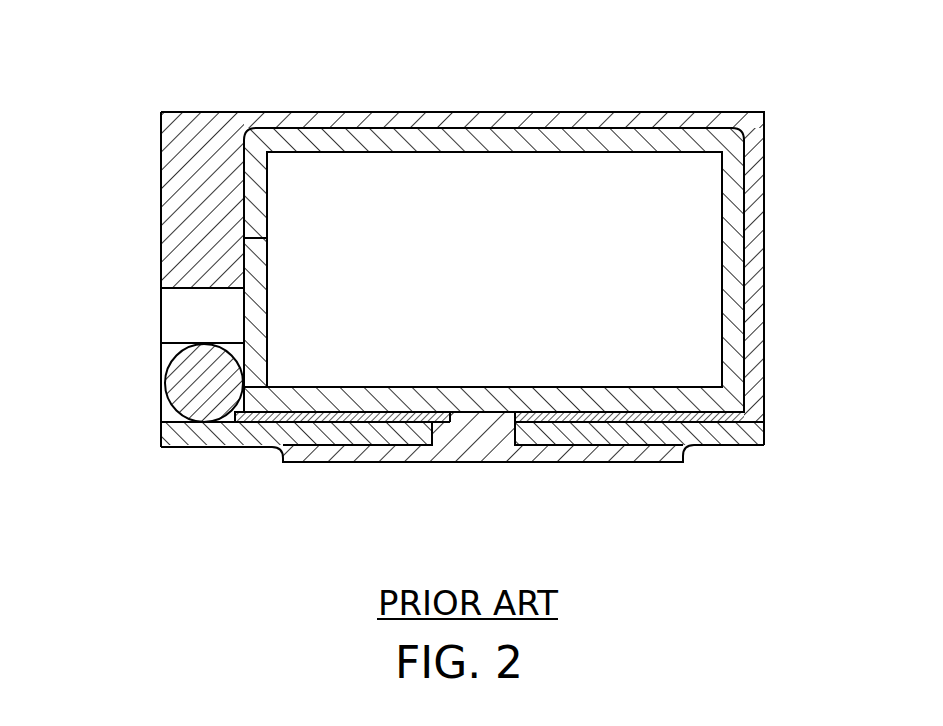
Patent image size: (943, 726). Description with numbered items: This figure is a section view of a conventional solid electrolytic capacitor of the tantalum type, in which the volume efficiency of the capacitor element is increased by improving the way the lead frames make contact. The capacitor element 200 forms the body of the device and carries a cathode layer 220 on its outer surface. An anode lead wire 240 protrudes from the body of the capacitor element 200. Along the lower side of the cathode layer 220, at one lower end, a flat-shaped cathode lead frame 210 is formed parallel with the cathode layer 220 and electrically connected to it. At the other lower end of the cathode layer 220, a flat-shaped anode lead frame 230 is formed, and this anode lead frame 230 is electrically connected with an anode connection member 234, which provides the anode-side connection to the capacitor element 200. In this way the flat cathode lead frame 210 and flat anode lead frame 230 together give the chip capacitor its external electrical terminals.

The capacitor element 200 is at (535, 186).
The cathode lead frame 210 is at (663, 452).
The cathode layer 220 is at (683, 137).
The anode lead frame 230 is at (318, 452).
The anode connection member 234 is at (172, 397).
The anode lead wire 240 is at (172, 320).